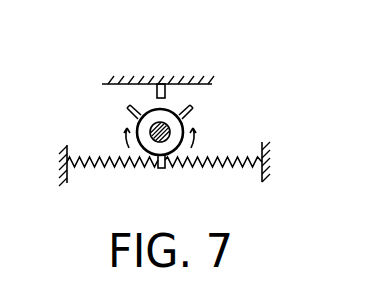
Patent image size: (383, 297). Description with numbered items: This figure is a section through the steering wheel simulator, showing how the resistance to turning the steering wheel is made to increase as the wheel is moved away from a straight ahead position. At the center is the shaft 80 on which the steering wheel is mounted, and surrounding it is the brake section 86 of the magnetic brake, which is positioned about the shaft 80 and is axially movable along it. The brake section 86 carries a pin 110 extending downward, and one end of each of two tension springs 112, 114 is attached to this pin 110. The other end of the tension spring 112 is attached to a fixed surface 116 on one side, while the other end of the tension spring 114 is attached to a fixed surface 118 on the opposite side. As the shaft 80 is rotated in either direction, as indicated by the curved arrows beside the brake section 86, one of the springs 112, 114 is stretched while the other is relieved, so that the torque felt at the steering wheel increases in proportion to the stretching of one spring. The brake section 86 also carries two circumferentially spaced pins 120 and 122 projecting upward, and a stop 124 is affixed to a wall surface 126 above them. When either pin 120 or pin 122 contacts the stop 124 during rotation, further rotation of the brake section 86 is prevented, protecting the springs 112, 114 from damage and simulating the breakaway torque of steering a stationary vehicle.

The shaft 80 is at (170, 100).
The brake section 86 is at (163, 125).
The pin 110 is at (164, 169).
The tension spring 112 is at (101, 169).
The tension spring 114 is at (213, 169).
The fixed surface 116 is at (262, 143).
The fixed surface 118 is at (67, 149).
The pin 120 is at (130, 112).
The pin 122 is at (192, 113).
The stop 124 is at (156, 91).
The wall surface 126 is at (106, 85).